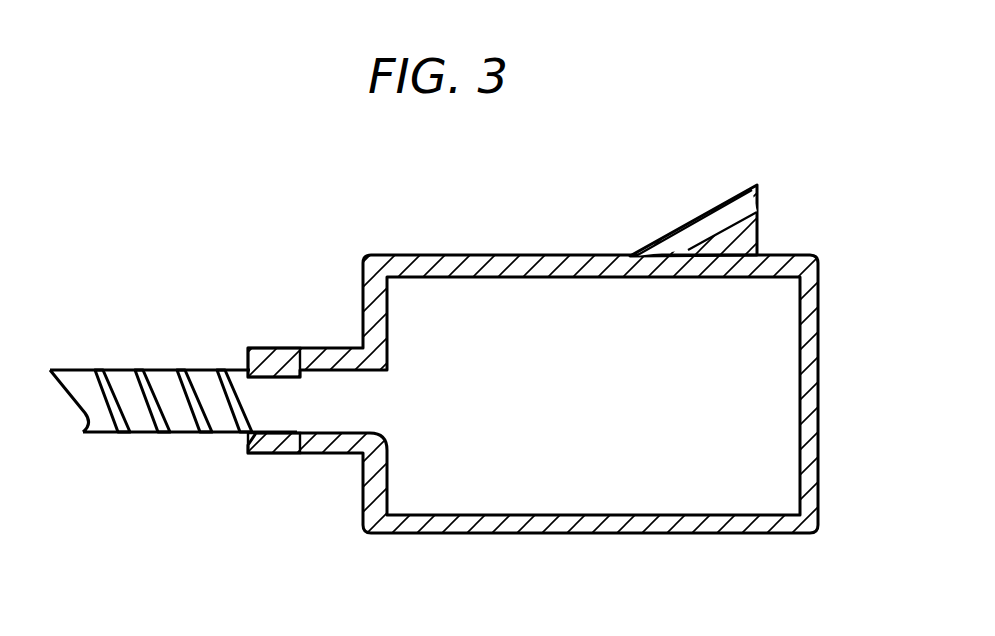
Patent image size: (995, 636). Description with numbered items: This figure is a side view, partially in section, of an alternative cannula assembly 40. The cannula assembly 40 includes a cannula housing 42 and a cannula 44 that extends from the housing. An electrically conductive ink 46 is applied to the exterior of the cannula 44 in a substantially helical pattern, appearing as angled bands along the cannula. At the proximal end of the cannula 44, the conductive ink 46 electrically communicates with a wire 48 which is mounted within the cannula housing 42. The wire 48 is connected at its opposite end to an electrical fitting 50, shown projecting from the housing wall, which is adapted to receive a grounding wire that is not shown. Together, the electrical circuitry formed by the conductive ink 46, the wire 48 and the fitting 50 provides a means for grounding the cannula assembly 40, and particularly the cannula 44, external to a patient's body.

The cannula assembly 40 is at (544, 399).
The cannula housing 42 is at (675, 519).
The cannula 44 is at (173, 417).
The electrically conductive ink 46 is at (144, 370).
The wire 48 is at (290, 350).
The electrical fitting 50 is at (740, 214).